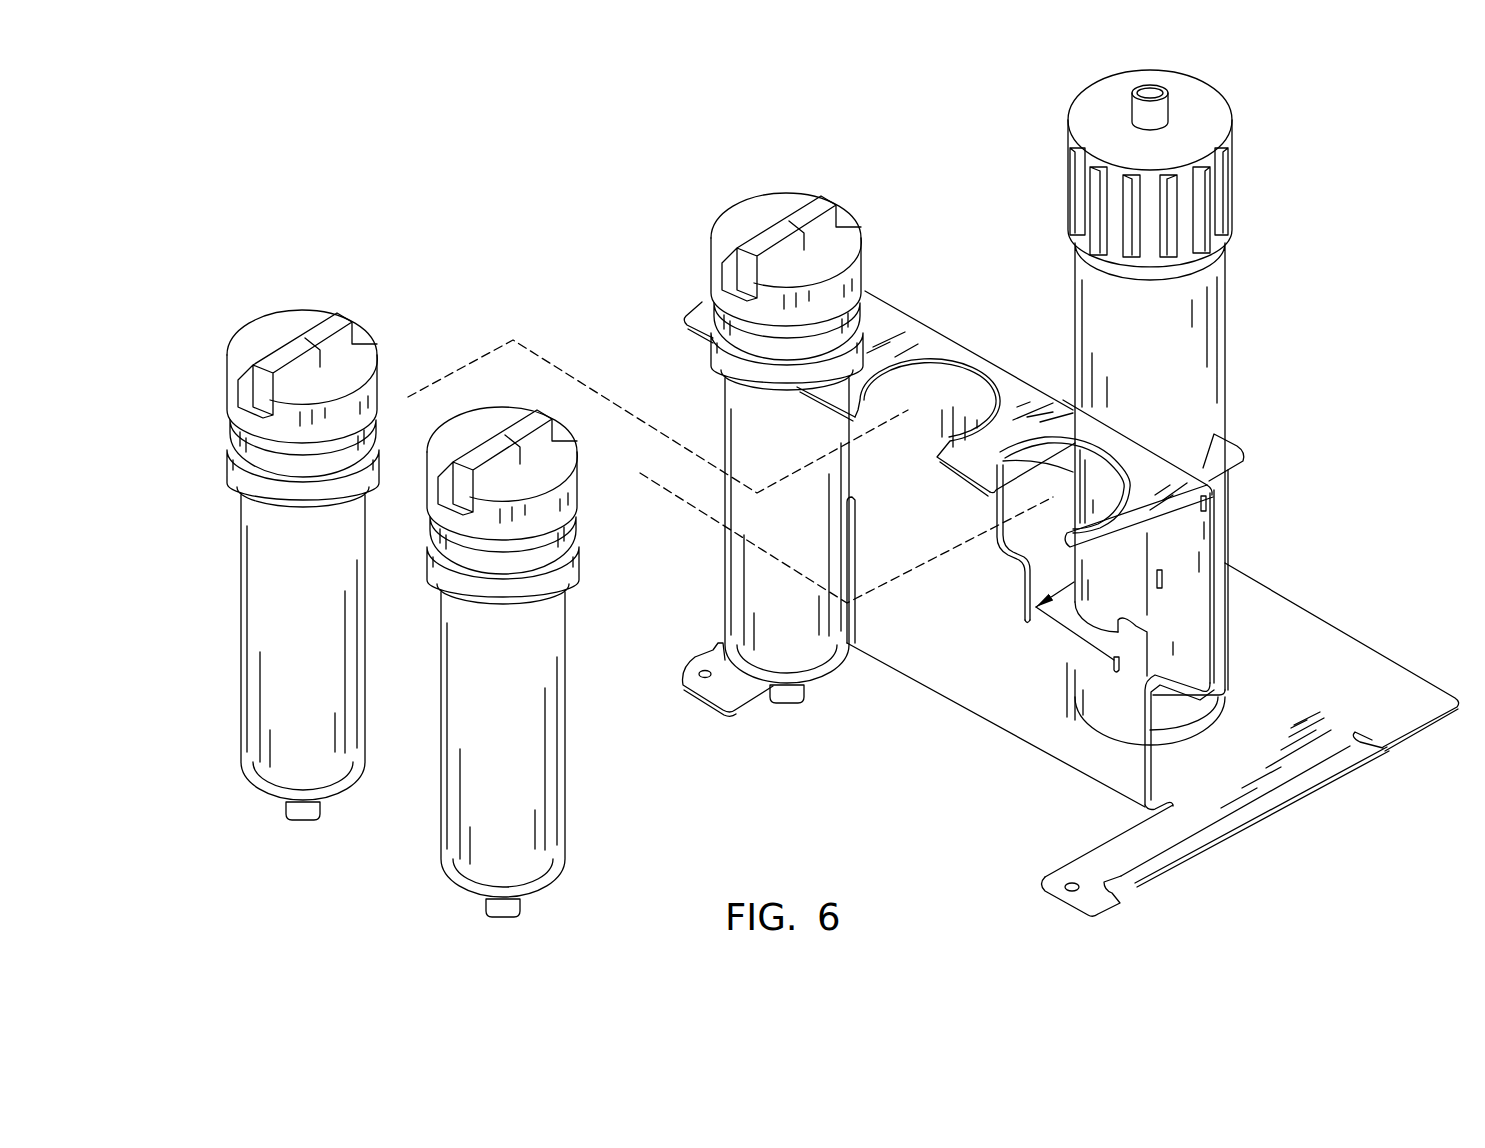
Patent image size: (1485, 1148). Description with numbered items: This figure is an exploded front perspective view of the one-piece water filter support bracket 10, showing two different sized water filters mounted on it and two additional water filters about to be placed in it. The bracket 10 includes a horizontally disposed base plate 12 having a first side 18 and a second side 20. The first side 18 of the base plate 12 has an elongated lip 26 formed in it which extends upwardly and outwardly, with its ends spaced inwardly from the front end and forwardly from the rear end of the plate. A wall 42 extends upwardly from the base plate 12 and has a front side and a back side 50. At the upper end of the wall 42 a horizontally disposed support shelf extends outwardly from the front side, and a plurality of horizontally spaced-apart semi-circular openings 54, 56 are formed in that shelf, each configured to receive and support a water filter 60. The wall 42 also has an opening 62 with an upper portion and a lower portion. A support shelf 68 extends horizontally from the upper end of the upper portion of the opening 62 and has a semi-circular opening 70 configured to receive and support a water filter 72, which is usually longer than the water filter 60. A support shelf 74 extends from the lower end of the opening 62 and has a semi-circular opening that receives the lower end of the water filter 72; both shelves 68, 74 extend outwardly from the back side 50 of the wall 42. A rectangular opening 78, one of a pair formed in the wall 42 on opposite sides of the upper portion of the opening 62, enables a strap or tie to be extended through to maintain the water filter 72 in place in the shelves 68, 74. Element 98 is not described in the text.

The bracket 10 is at (1005, 312).
The base plate 12 is at (1259, 709).
The first side 18 is at (1417, 733).
The second side 20 is at (852, 484).
The elongated lip 26 is at (1232, 845).
The wall 42 is at (1030, 643).
The back side 50 is at (1217, 637).
The semi-circular opening 54 is at (1150, 540).
The semi-circular opening 56 is at (922, 357).
The water filter 60 is at (232, 628).
The opening 62 is at (939, 614).
The support shelf 68 is at (1250, 436).
The semi-circular opening 70 is at (1204, 462).
The water filter 72 is at (1233, 277).
The support shelf 74 is at (1022, 611).
The rectangular opening 78 is at (1162, 578).
The slot 98 is at (1207, 500).